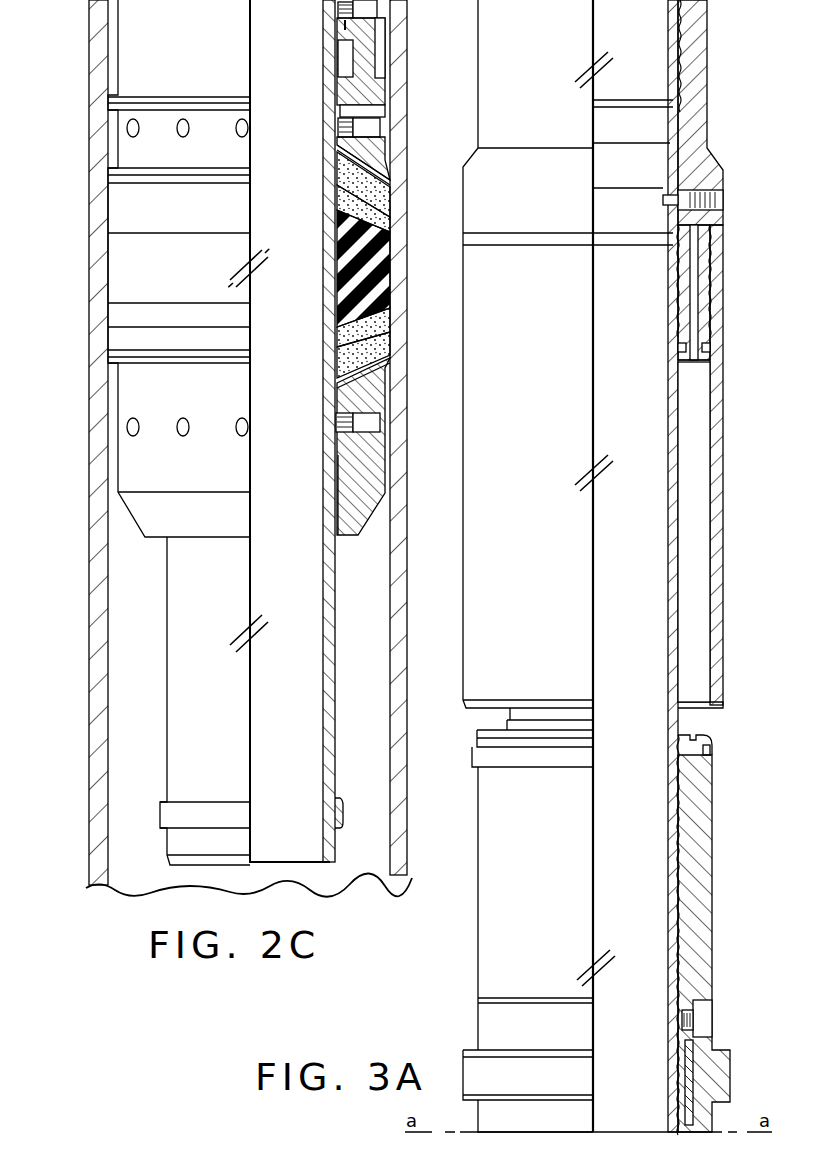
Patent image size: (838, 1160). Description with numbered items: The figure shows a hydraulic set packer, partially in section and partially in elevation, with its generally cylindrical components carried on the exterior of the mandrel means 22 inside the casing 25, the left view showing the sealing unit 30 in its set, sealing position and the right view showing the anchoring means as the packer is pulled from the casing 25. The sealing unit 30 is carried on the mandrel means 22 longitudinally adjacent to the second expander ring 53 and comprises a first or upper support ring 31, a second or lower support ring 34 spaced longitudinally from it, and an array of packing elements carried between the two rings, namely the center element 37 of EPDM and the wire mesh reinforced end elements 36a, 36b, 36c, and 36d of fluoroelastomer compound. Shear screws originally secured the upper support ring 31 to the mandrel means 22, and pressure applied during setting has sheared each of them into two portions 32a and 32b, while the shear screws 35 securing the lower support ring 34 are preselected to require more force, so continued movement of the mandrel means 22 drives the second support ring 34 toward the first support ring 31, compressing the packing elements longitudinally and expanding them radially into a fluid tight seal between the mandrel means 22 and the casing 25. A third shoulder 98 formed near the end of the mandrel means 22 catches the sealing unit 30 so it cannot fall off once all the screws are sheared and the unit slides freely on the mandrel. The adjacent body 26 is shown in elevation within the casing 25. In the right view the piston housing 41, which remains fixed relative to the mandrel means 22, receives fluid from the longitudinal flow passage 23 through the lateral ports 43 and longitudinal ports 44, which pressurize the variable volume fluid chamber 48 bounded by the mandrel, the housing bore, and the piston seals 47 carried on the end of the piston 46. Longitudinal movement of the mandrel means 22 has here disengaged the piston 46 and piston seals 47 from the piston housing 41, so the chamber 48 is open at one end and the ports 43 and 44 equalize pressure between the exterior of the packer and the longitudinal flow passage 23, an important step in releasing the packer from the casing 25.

In FIG. 2C, the mandrel means 22 is at (336, 706).
In FIG. 3A, the mandrel means 22 is at (678, 458).
In FIG. 2C, the longitudinal flow passage 23 is at (290, 588).
In FIG. 3A, the longitudinal flow passage 23 is at (630, 588).
In FIG. 2C, the casing 25 is at (90, 570).
In FIG. 2C, the tool body 26 is at (143, 653).
In FIG. 2C, the sealing unit 30 is at (84, 230).
In FIG. 2C, the first support ring 31 is at (372, 146).
In FIG. 2C, the sheared portion of shear screw 32a is at (342, 126).
In FIG. 2C, the sheared portion of shear screw 32b is at (352, 26).
In FIG. 2C, the second support ring 34 is at (367, 462).
In FIG. 2C, the shear screws 35 is at (338, 424).
In FIG. 2C, the end element 36a is at (348, 172).
In FIG. 2C, the end element 36b is at (346, 206).
In FIG. 2C, the end element 36c is at (348, 318).
In FIG. 2C, the end element 36d is at (347, 360).
In FIG. 2C, the center element 37 is at (356, 260).
In FIG. 3A, the piston housing 41 is at (718, 668).
In FIG. 3A, the lateral ports 43 is at (663, 200).
In FIG. 3A, the longitudinal ports 44 is at (688, 243).
In FIG. 3A, the piston 46 is at (703, 868).
In FIG. 3A, the piston seals 47 is at (707, 752).
In FIG. 3A, the variable volume fluid chamber 48 is at (693, 548).
In FIG. 2C, the second expander ring 53 is at (357, 48).
In FIG. 2C, the third shoulder 98 is at (338, 800).